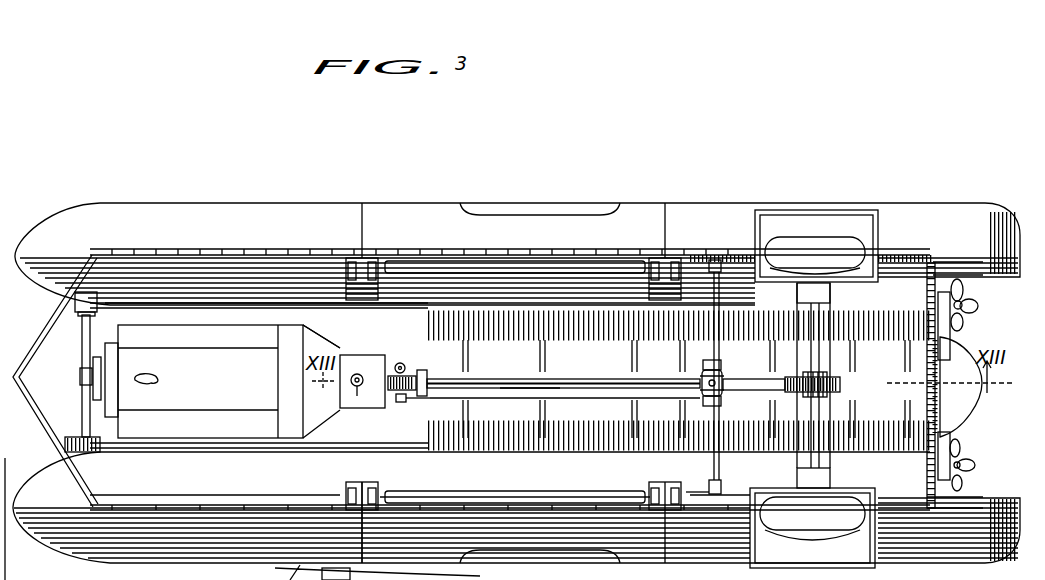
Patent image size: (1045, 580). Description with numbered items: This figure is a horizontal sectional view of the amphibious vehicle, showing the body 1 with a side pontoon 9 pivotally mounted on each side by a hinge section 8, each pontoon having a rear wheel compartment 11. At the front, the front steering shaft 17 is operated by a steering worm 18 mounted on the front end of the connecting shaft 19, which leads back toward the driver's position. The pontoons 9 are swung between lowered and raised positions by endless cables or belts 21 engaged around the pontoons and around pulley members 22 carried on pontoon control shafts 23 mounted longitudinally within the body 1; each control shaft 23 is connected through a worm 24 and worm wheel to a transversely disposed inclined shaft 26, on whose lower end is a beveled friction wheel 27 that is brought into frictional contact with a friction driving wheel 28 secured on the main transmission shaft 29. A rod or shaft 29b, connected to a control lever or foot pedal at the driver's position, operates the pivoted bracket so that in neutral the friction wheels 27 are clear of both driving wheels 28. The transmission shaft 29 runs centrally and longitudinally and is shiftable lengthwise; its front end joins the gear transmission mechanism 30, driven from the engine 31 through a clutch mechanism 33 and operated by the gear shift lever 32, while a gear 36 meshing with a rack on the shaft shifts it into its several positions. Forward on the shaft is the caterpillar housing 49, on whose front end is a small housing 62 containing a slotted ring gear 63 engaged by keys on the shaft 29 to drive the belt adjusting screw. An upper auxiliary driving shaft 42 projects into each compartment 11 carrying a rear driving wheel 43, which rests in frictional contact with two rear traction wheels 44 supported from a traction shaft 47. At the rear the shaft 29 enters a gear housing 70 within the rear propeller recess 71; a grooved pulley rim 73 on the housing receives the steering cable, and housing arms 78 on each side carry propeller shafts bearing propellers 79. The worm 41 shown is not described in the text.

The body 1 is at (35, 342).
The hinge section 8 is at (215, 250).
The side pontoon 9 is at (163, 220).
The rear wheel compartment 11 is at (767, 225).
The front steering shaft 17 is at (82, 352).
The steering worm 18 is at (97, 452).
The connecting shaft 19 is at (244, 450).
The endless cable or belt 21 is at (365, 545).
The pulley member 22 is at (370, 490).
The pontoon control shaft 23 is at (510, 497).
The worm 24 is at (725, 268).
The inclined shaft 26 is at (719, 328).
The beveled friction disk or wheel 27 is at (690, 370).
The friction driving disk or wheel 28 is at (670, 400).
The main transmission shaft 29 is at (596, 372).
The rod or shaft 29b is at (534, 400).
The gear transmission mechanism 30 is at (368, 357).
The engine 31 is at (216, 381).
The gear shift lever 32 is at (358, 396).
The clutch mechanism 33 is at (313, 328).
The gear 36 is at (402, 362).
The worm 41 is at (910, 422).
The upper auxiliary driving shaft 42 is at (811, 410).
The rear driving wheel 43 is at (830, 500).
The rear traction wheel 44 is at (856, 241).
The traction shaft 47 is at (824, 373).
The caterpillar housing 49 is at (510, 370).
The small housing 62 is at (432, 390).
The ring gear 63 is at (427, 371).
The gear housing 70 is at (947, 370).
The rear propeller recess 71 is at (969, 290).
The grooved pulley rim 73 is at (940, 402).
The housing arm 78 is at (958, 439).
The propeller 79 is at (962, 482).